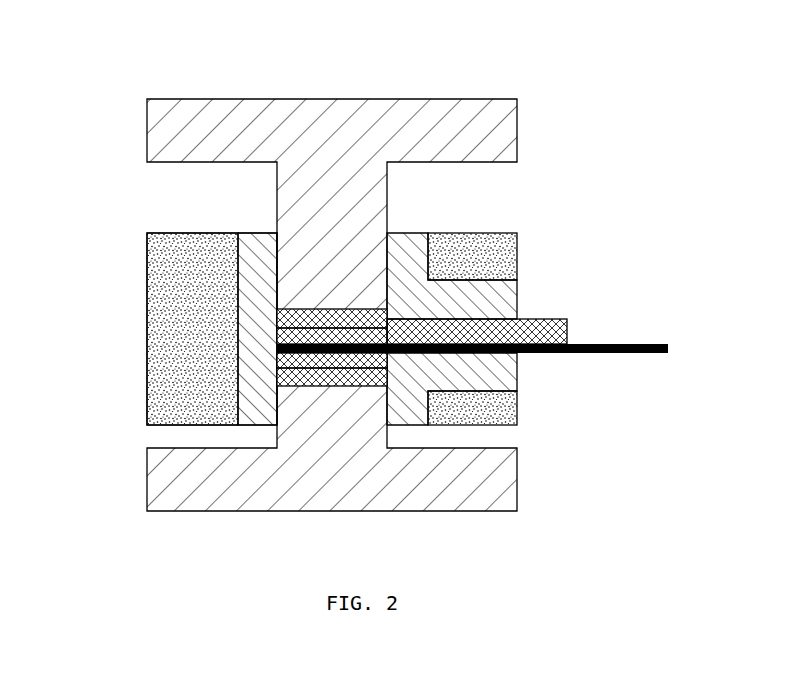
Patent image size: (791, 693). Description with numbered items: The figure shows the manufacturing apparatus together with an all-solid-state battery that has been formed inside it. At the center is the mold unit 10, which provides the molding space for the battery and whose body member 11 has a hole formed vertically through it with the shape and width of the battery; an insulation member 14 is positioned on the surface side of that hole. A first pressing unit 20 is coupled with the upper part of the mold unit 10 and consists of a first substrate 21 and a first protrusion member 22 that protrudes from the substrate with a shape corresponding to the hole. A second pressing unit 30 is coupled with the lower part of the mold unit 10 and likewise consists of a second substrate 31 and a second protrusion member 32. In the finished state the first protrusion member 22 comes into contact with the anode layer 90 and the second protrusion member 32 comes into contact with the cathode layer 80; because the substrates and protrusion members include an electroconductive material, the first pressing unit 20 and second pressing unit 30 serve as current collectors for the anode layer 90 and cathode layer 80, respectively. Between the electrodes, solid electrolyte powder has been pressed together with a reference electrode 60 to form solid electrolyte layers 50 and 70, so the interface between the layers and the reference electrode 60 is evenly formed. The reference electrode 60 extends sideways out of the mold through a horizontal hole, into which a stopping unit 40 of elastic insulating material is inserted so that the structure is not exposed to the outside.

The mold unit 10 is at (152, 228).
The body member 11 is at (162, 252).
The insulation member 14 is at (255, 237).
The first pressing unit 20 is at (460, 98).
The first substrate 21 is at (508, 133).
The first protrusion member 22 is at (385, 199).
The second pressing unit 30 is at (525, 511).
The second substrate 31 is at (517, 478).
The second protrusion member 32 is at (374, 437).
The stopping unit 40 is at (540, 323).
The solid electrolyte layer 50 is at (290, 361).
The reference electrode 60 is at (630, 343).
The solid electrolyte layer 70 is at (290, 337).
The cathode layer 80 is at (290, 378).
The anode layer 90 is at (290, 316).